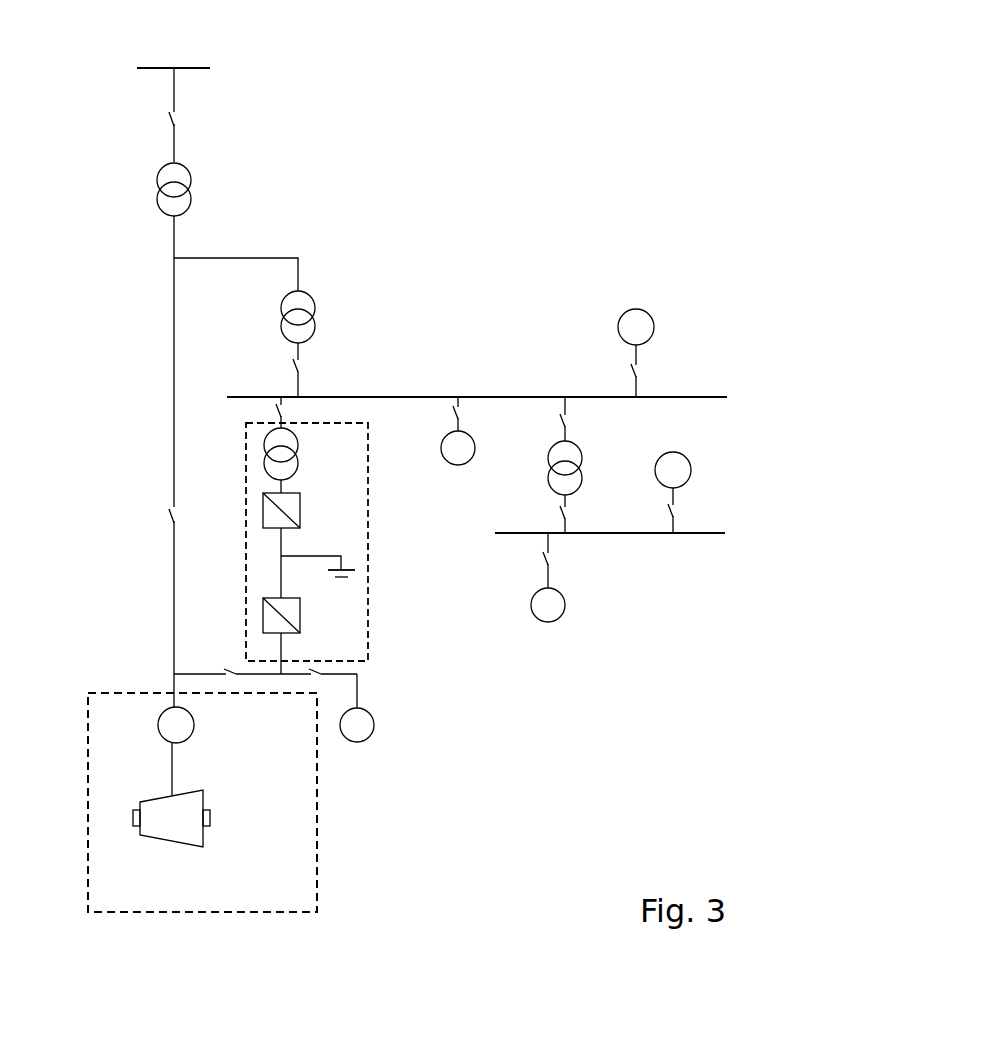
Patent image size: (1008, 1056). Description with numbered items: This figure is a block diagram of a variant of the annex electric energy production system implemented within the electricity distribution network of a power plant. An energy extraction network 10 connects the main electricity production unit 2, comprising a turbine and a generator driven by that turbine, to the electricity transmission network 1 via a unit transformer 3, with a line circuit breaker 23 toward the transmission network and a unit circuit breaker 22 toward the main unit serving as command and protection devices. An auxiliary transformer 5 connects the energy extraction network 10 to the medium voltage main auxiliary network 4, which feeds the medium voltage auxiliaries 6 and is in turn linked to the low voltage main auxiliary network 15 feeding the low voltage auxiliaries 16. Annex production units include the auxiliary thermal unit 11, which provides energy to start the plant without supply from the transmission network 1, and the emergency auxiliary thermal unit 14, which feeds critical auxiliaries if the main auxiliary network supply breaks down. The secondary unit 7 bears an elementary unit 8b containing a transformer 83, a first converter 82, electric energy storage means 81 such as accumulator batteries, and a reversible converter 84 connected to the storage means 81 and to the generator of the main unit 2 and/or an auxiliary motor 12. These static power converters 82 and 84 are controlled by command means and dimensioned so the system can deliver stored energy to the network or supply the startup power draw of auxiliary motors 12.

The electricity transmission network 1 is at (203, 77).
The main electricity production unit 2 is at (317, 822).
The unit transformer 3 is at (163, 213).
The medium voltage main auxiliary network 4 is at (458, 382).
The auxiliary transformer 5 is at (285, 340).
The medium voltage auxiliaries 6 is at (475, 448).
The secondary unit 7 is at (378, 661).
The elementary unit 8b is at (301, 496).
The energy extraction network 10 is at (162, 398).
The auxiliary thermal unit 11 is at (645, 312).
The auxiliary motor 12 is at (443, 727).
The auxiliary thermal unit 14 is at (684, 455).
The low voltage main auxiliary network 15 is at (737, 527).
The low voltage auxiliaries 16 is at (533, 592).
The unit circuit breaker 22 is at (128, 539).
The line circuit breaker 23 is at (114, 132).
The electric energy storage means 81 is at (368, 563).
The converter 82 is at (197, 489).
The transformer 83 is at (338, 438).
The reversible converter 84 is at (242, 609).